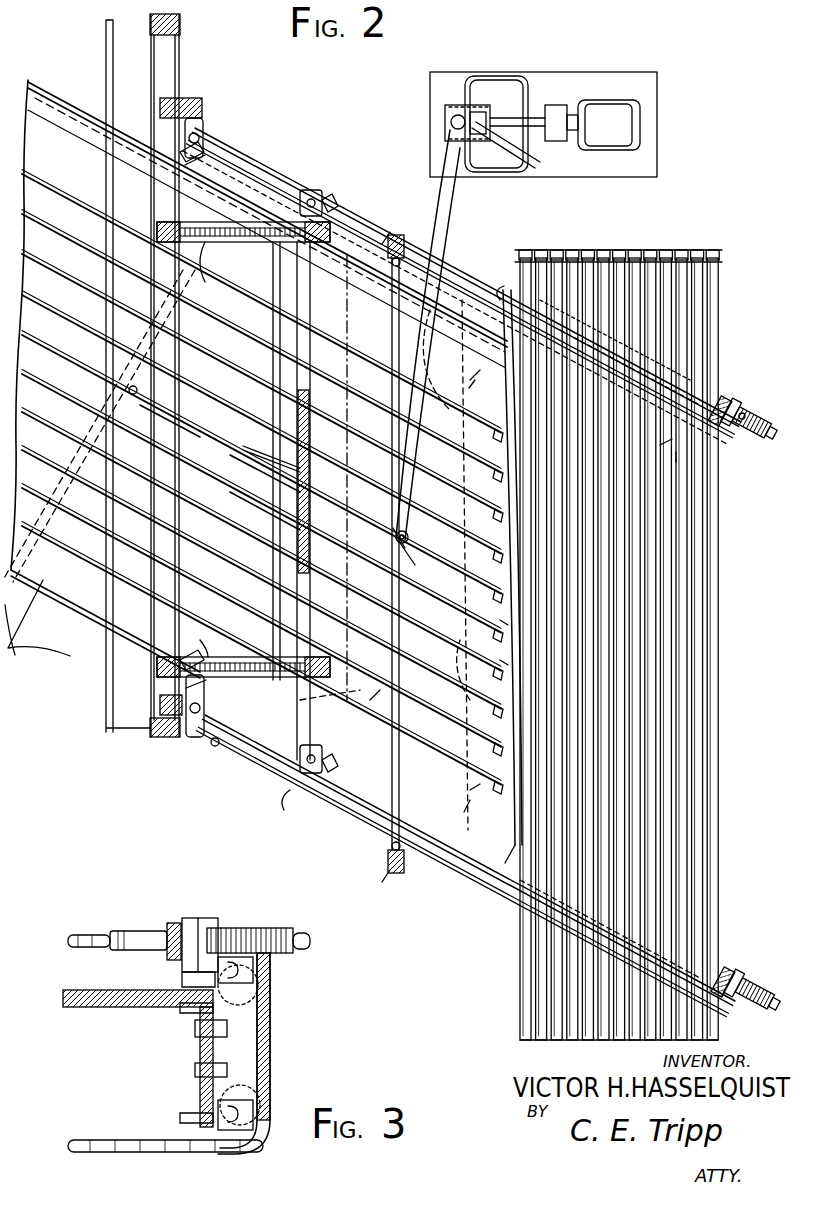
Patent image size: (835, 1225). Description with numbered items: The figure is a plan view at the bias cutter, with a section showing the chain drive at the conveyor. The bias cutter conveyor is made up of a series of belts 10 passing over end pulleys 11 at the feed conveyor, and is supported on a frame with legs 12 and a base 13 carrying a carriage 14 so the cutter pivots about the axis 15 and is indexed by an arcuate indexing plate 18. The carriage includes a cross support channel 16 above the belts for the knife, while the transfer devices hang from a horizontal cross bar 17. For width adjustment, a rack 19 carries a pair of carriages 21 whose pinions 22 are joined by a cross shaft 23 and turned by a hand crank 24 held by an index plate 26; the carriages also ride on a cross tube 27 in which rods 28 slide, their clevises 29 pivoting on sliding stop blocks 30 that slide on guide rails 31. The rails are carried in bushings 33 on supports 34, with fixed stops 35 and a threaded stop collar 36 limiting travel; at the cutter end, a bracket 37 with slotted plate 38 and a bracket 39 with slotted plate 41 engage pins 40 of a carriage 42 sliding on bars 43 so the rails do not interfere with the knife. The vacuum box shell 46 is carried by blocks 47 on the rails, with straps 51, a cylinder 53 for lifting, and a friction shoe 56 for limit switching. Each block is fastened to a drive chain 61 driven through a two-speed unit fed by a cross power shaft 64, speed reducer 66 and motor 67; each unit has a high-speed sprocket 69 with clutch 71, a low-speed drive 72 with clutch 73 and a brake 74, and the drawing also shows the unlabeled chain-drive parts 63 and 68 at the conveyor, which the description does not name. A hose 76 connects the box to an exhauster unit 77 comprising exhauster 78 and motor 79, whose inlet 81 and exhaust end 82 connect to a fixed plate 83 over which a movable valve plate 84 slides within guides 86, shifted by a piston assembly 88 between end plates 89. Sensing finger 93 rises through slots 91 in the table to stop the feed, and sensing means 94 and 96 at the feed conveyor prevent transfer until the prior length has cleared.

In FIG. 2, the belts 10 is at (60, 168).
In FIG. 2, the end pulleys 11 is at (474, 459).
In FIG. 2, the legs 12 is at (478, 862).
In FIG. 2, the base 13 is at (472, 300).
In FIG. 2, the carriage 14 is at (52, 557).
In FIG. 2, the axis 15 is at (125, 384).
In FIG. 2, the cross support channel 16 is at (113, 31).
In FIG. 2, the horizontal cross bar 17 is at (169, 409).
In FIG. 2, the arcuate indexing plate 18 is at (104, 104).
In FIG. 2, the width adjusting rack 19 is at (210, 246).
In FIG. 2, the carriages 21 is at (312, 267).
In FIG. 2, the pinions 22 is at (268, 248).
In FIG. 2, the cross shaft 23 is at (274, 506).
In FIG. 2, the hand crank 24 is at (242, 211).
In FIG. 2, the index plate 26 is at (348, 667).
In FIG. 2, the cross tube 27 is at (294, 472).
In FIG. 2, the rods 28 is at (298, 396).
In FIG. 2, the clevises 29 is at (331, 213).
In FIG. 2, the sliding stop blocks 30 is at (307, 195).
In FIG. 2, the guide rails 31 is at (434, 277).
In FIG. 3, the guide rails 31 is at (124, 934).
In FIG. 2, the bushings 33 is at (756, 434).
In FIG. 3, the bushings 33 is at (272, 930).
In FIG. 2, the supports 34 is at (732, 406).
In FIG. 3, the supports 34 is at (195, 922).
In FIG. 2, the fixed stops 35 is at (318, 202).
In FIG. 2, the threaded stop collar 36 is at (717, 401).
In FIG. 3, the threaded stop collar 36 is at (170, 928).
In FIG. 2, the bracket 37 is at (158, 708).
In FIG. 2, the slotted plate 38 is at (184, 738).
In FIG. 2, the bracket 39 is at (162, 102).
In FIG. 2, the pins 40 is at (206, 141).
In FIG. 2, the slotted plate 41 is at (202, 122).
In FIG. 2, the carriage 42 is at (188, 166).
In FIG. 2, the bars 43 is at (183, 154).
In FIG. 2, the shroud or shell 46 is at (394, 544).
In FIG. 2, the blocks 47 is at (408, 238).
In FIG. 2, the straps 51 is at (400, 874).
In FIG. 2, the cylinder 53 is at (384, 239).
In FIG. 2, the shoe 56 is at (388, 223).
In FIG. 2, the drive chain 61 is at (435, 282).
In FIG. 3, the drive chain 61 is at (266, 1051).
In FIG. 2, the channel end 63 is at (506, 304).
In FIG. 2, the cross power shaft 64 is at (503, 669).
In FIG. 2, the speed reducer 66 is at (503, 632).
In FIG. 2, the motor 67 is at (452, 542).
In FIG. 2, the gear 68 is at (745, 414).
In FIG. 3, the gear 68 is at (254, 984).
In FIG. 2, the high-speed drive sprocket 69 is at (681, 452).
In FIG. 2, the high-speed magnetically actuated clutch 71 is at (401, 518).
In FIG. 2, the low-speed drive 72 is at (658, 369).
In FIG. 2, the low-speed magnetically actuated clutch 73 is at (633, 351).
In FIG. 2, the magnetically actuated brake 74 is at (478, 381).
In FIG. 2, the hose 76 is at (387, 373).
In FIG. 2, the exhauster unit 77 is at (423, 78).
In FIG. 2, the exhauster 78 is at (493, 83).
In FIG. 2, the drive motor 79 is at (620, 119).
In FIG. 2, the inlet line 81 is at (445, 114).
In FIG. 2, the exhaust end 82 is at (519, 171).
In FIG. 2, the lower fixed plate 83 is at (483, 122).
In FIG. 2, the upper movable valve plate 84 is at (448, 137).
In FIG. 2, the guides 86 is at (446, 76).
In FIG. 2, the fluid motor piston assembly 88 is at (532, 116).
In FIG. 2, the end plates 89 is at (447, 126).
In FIG. 2, the slots 91 is at (376, 515).
In FIG. 2, the sensing finger 93 is at (373, 478).
In FIG. 2, the sensing means 94 is at (623, 762).
In FIG. 2, the sensing means 96 is at (622, 1002).